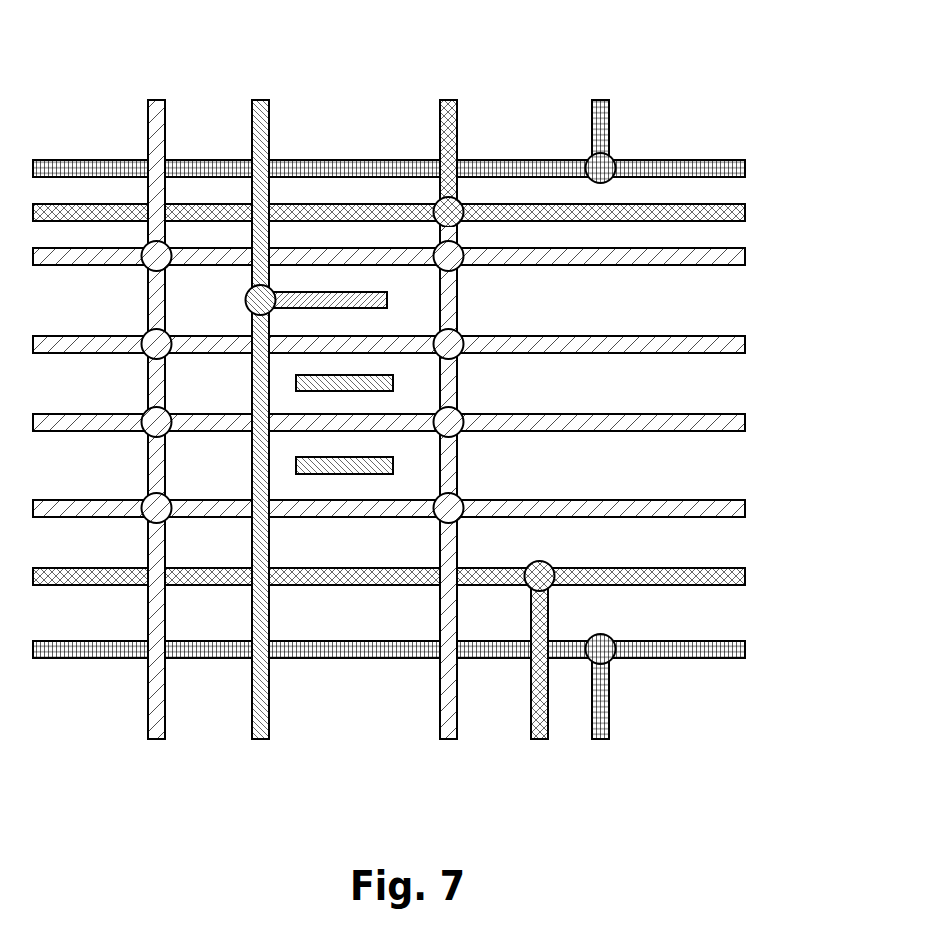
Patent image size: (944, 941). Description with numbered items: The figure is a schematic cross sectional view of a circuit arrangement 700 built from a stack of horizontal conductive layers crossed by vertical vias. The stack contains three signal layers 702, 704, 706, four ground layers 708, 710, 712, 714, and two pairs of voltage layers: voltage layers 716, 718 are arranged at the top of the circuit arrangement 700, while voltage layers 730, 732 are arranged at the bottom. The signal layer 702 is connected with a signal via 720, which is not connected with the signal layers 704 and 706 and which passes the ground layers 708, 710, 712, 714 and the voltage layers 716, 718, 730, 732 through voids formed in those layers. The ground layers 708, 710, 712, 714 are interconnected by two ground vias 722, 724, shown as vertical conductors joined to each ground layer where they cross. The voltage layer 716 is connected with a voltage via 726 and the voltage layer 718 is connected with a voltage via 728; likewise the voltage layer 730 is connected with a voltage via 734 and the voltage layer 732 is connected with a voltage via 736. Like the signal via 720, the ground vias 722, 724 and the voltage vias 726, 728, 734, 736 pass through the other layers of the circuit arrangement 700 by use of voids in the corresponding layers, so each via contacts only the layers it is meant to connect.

The circuit arrangement 700 is at (756, 130).
The signal layer 702 is at (375, 295).
The signal layer 704 is at (380, 378).
The signal layer 706 is at (380, 460).
The ground layer 708 is at (742, 256).
The ground layer 710 is at (742, 344).
The ground layer 712 is at (742, 422).
The ground layer 714 is at (742, 508).
The voltage layer 716 is at (742, 212).
The voltage layer 718 is at (742, 168).
The signal via 720 is at (257, 107).
The ground via 722 is at (153, 107).
The ground via 724 is at (453, 732).
The voltage via 726 is at (446, 107).
The voltage via 728 is at (598, 107).
The voltage layer 730 is at (742, 576).
The voltage layer 732 is at (742, 650).
The voltage via 734 is at (541, 732).
The voltage via 736 is at (602, 732).